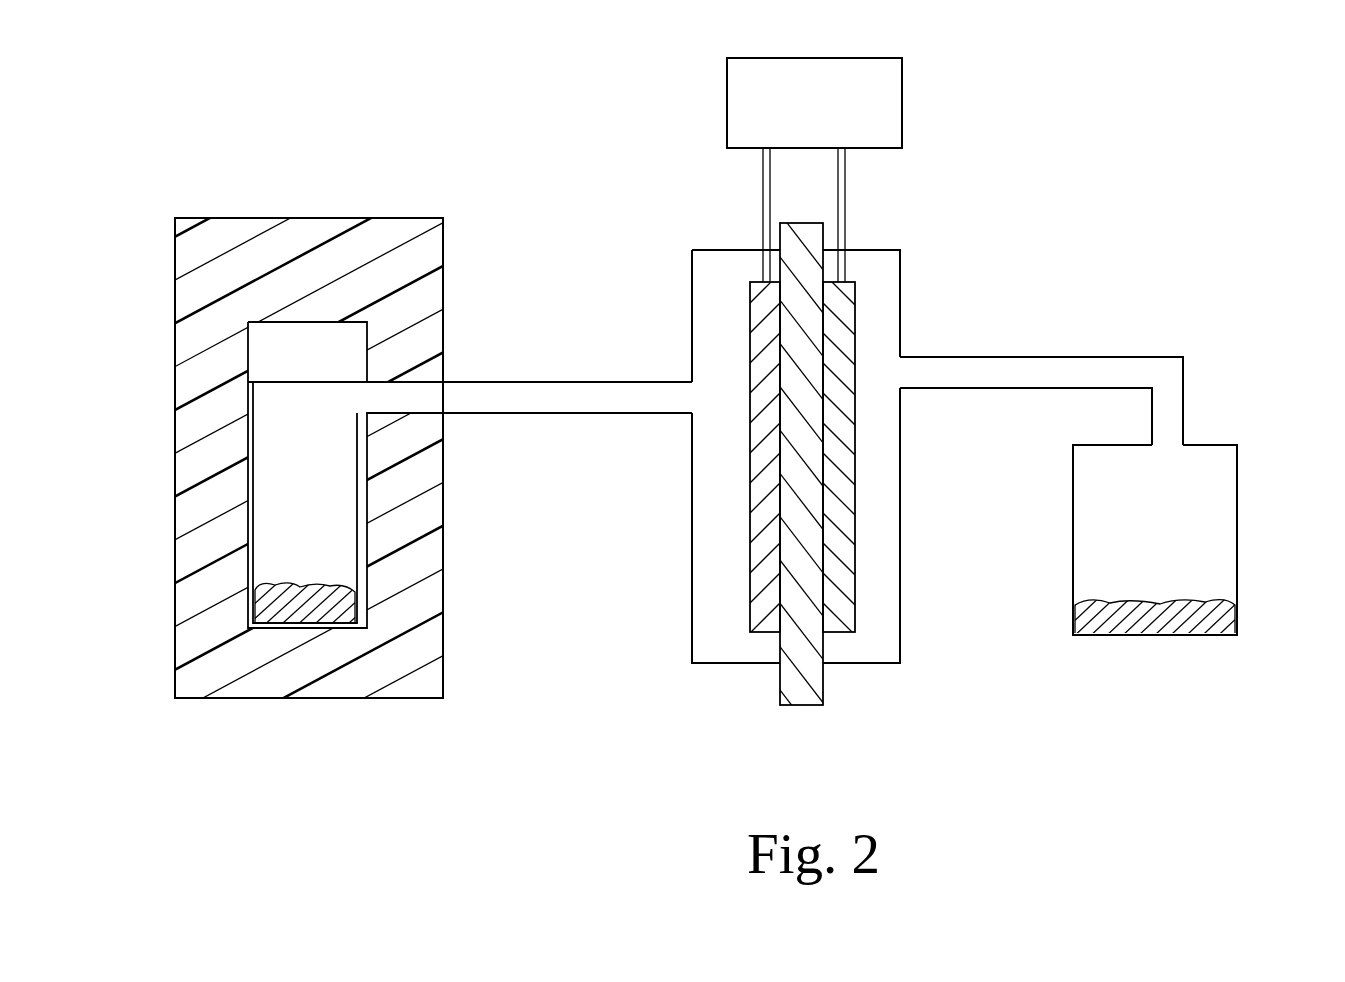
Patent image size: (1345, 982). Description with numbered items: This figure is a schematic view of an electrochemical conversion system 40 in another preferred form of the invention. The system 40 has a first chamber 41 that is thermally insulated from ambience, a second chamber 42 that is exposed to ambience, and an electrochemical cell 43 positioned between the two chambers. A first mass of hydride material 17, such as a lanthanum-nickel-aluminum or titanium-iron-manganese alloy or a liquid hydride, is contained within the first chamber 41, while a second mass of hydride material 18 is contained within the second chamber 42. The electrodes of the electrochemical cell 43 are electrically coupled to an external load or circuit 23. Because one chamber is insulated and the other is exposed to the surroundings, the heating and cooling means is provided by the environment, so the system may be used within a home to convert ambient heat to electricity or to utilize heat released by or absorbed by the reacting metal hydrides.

The electrochemical conversion system 40 is at (265, 105).
The first chamber 41 is at (315, 447).
The first mass of hydride material 17 is at (333, 590).
The external load or circuit 23 is at (902, 97).
The electrochemical cell 43 is at (863, 492).
The second chamber 42 is at (1207, 495).
The second mass of hydride material 18 is at (1207, 608).